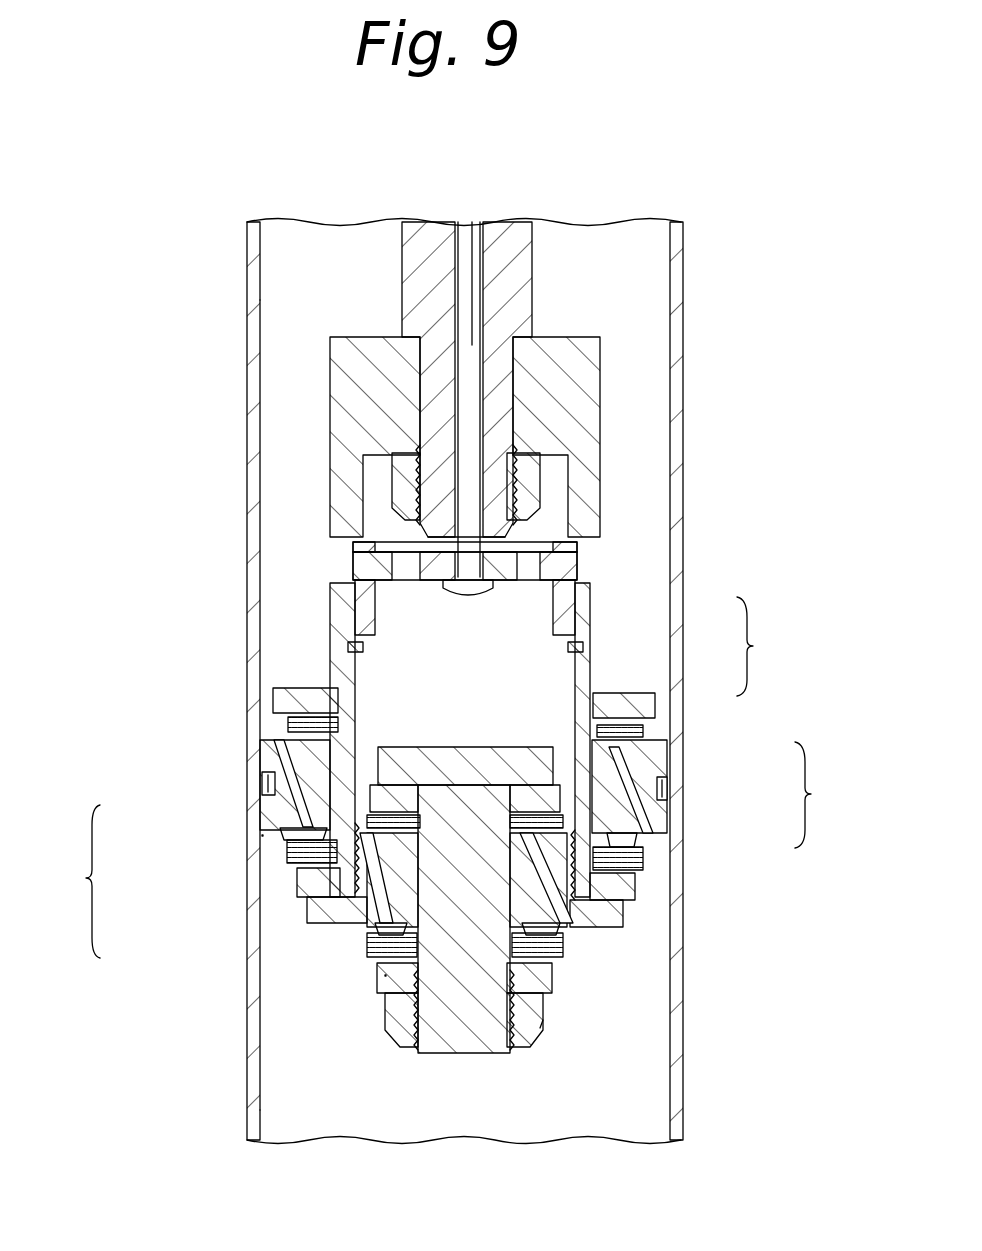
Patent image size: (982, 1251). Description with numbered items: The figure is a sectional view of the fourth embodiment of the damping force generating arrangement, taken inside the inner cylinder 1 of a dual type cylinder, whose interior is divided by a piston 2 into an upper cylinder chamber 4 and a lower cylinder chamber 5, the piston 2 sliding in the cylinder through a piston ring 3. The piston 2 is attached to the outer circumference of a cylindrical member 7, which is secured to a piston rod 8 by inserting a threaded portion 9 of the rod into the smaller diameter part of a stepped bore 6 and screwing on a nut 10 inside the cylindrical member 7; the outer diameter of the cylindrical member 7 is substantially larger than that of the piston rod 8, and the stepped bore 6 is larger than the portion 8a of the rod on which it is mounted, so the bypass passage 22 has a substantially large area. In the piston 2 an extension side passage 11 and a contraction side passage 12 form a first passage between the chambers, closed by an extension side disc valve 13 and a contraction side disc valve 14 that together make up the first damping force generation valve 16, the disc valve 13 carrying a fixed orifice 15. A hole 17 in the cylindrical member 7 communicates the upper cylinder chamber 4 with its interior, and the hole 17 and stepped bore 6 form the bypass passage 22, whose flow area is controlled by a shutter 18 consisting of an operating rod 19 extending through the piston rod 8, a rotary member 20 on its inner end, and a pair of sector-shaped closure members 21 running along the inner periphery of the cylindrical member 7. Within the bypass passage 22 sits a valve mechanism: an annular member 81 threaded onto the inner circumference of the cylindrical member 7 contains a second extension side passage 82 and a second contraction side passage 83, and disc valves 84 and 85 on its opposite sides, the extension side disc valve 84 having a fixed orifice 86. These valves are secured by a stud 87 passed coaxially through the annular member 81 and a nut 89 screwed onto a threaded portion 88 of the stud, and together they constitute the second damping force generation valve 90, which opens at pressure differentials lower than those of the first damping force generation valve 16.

The inner cylinder 1 is at (679, 258).
The upper cylinder chamber 4 is at (655, 305).
The lower cylinder chamber 5 is at (655, 1119).
The cylindrical member 7 is at (600, 377).
The piston rod 8 is at (522, 258).
The portion of the piston rod 8a is at (513, 410).
The threaded portion 9 is at (540, 477).
The nut 10 is at (505, 528).
The operating rod 19 is at (460, 242).
The shutter 18 is at (357, 544).
The rotary member 20 is at (353, 570).
The sector-shaped closure members 21 is at (355, 606).
The stepped bore 6 is at (577, 681).
The hole 17 is at (590, 625).
The bypass passage 22 is at (766, 646).
The piston 2 is at (653, 770).
The contraction side disc valve 14 is at (650, 718).
The contraction side passage 12 is at (655, 833).
The extension side passage 11 is at (297, 802).
The piston ring 3 is at (665, 791).
The extension side disc valve 13 is at (642, 860).
The first damping force generation valve 16 is at (824, 795).
The fixed orifice 15 is at (291, 840).
The second extension side passage 82 is at (311, 880).
The disc valve 85 is at (260, 768).
The stud 87 is at (465, 1053).
The annular member 81 is at (367, 909).
The second contraction side passage 83 is at (620, 935).
The fixed orifice 86 is at (367, 945).
The threaded portion 88 is at (520, 1045).
The nut 89 is at (535, 1028).
The disc valve 84 is at (383, 980).
The second damping force generation valve 90 is at (71, 881).